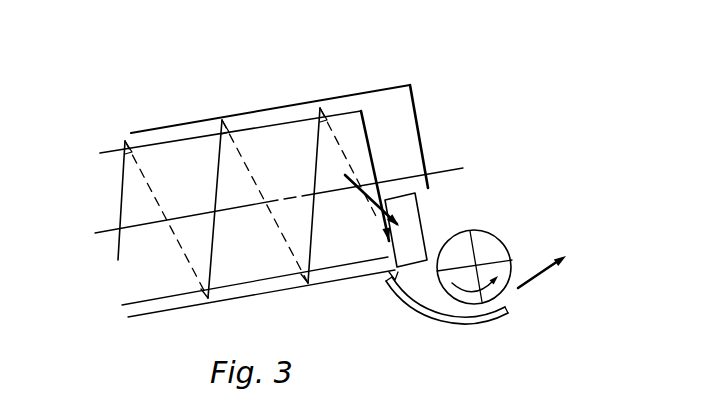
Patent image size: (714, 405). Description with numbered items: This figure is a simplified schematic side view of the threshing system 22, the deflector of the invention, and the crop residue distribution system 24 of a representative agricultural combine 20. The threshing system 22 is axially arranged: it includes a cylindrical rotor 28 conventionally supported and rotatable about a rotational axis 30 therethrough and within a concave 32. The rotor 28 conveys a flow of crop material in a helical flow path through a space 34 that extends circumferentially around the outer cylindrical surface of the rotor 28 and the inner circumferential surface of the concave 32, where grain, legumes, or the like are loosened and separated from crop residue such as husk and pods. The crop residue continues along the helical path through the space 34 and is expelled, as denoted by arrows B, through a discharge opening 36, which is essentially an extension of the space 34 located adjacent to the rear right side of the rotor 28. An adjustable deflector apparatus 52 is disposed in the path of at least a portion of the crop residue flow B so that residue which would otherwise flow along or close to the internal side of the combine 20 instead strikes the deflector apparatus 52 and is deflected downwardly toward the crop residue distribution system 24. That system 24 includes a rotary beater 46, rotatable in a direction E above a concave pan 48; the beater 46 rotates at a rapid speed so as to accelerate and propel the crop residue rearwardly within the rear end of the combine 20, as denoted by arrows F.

The agricultural combine 20 is at (526, 58).
The threshing system 22 is at (413, 82).
The crop residue distribution system 24 is at (514, 247).
The cylindrical rotor 28 is at (361, 111).
The rotational axis 30 is at (107, 232).
The concave 32 is at (155, 128).
The space 34 is at (258, 118).
The discharge opening 36 is at (398, 162).
The beater 46 is at (487, 233).
The concave pan 48 is at (462, 324).
The adjustable deflector apparatus 52 is at (425, 206).
The crop residue flow arrows B is at (389, 210).
The beater rotation direction E is at (481, 292).
The rearward flow arrows F is at (541, 278).